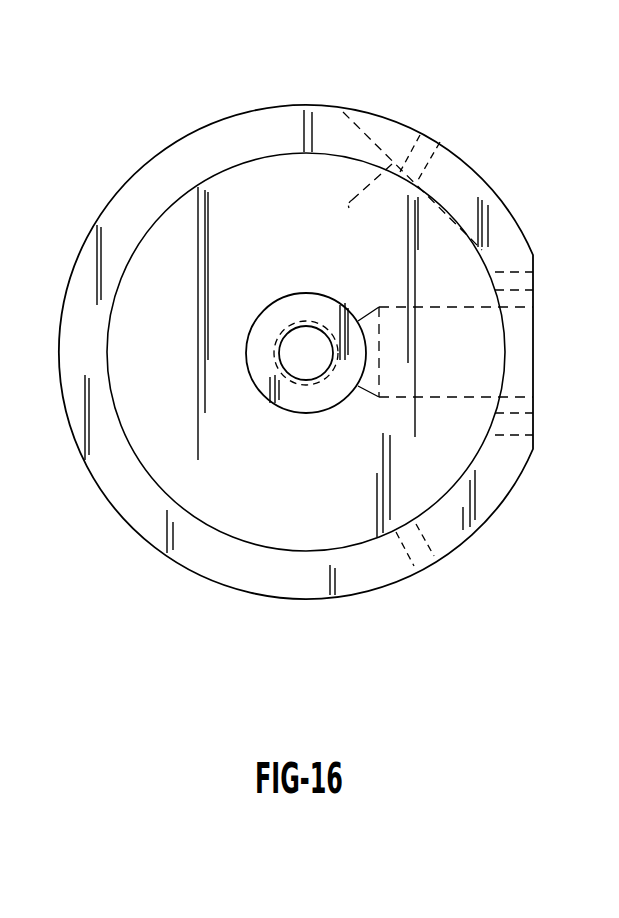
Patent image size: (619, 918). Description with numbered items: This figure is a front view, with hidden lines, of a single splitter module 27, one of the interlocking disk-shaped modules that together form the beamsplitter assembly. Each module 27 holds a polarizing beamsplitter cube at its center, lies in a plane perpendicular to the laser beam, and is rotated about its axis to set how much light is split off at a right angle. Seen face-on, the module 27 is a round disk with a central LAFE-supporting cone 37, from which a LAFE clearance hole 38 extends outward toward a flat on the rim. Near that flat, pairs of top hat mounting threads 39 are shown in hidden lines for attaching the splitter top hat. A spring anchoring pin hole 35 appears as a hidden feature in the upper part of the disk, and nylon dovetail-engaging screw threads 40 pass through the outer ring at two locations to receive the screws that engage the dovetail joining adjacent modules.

The splitter module 27 is at (198, 131).
The spring anchoring pin hole 35 is at (352, 193).
The LAFE-supporting cone 37 is at (368, 312).
The LAFE clearance hole 38 is at (440, 304).
The top hat mounting threads 39 is at (533, 255).
The nylon dovetail-engaging screw threads 40 is at (428, 163).